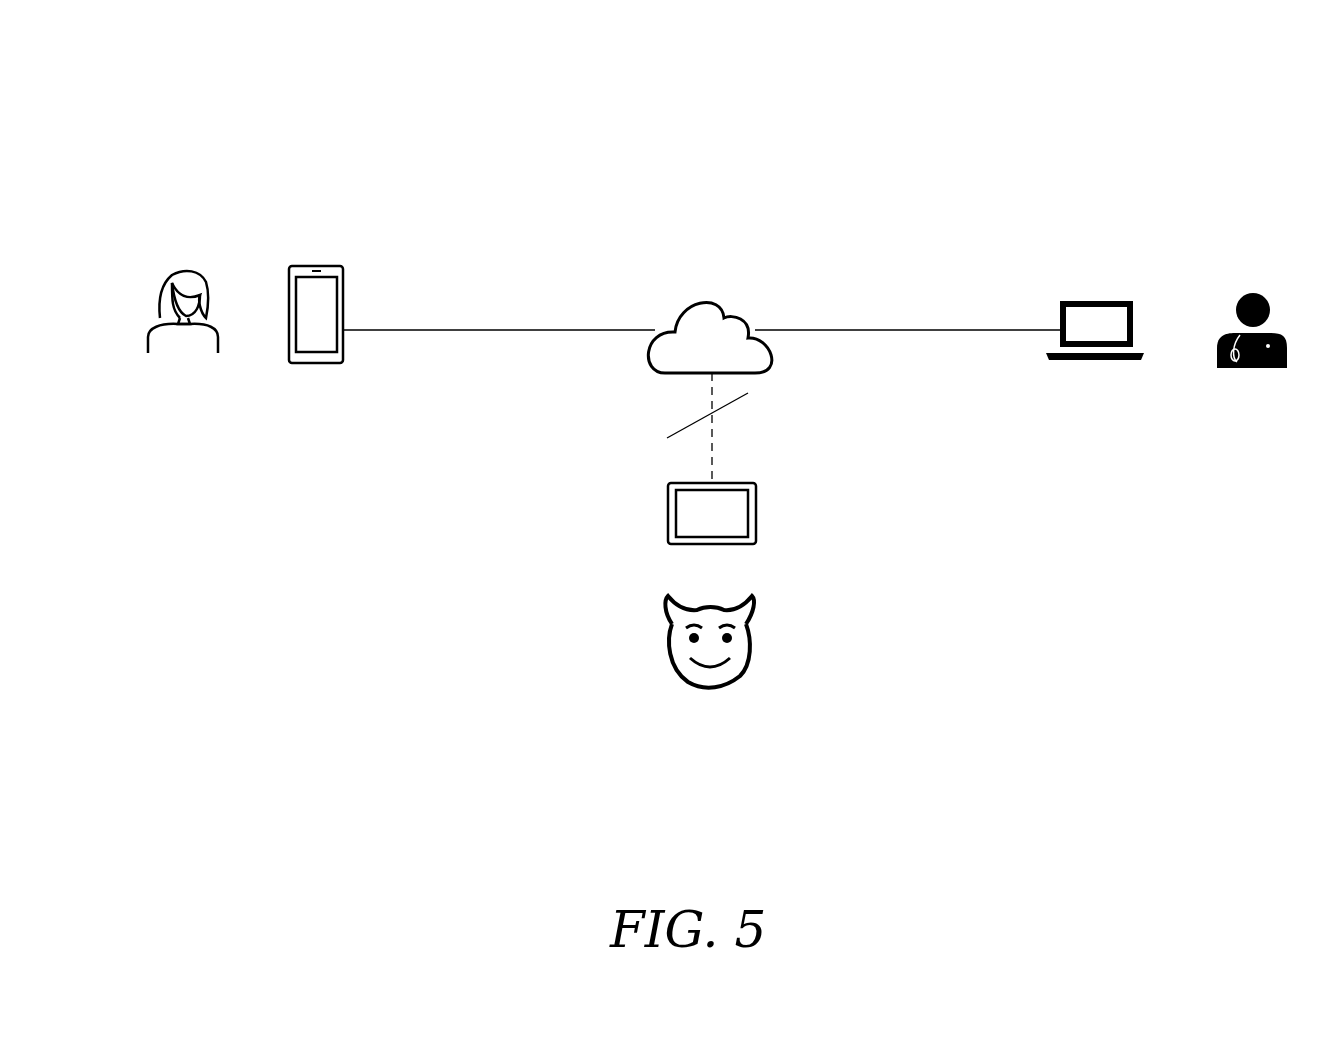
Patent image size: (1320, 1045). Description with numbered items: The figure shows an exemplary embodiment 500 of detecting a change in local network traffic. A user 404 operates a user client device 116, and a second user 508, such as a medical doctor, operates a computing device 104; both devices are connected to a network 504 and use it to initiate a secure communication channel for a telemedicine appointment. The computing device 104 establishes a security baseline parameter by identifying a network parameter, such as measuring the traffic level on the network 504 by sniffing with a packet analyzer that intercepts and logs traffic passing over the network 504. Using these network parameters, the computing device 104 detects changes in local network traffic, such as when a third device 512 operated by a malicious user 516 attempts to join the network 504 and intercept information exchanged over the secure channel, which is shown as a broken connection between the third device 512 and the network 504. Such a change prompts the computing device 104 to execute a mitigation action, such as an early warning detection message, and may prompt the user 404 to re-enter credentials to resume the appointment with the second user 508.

The exemplary embodiment 500 is at (288, 82).
The user 404 is at (181, 268).
The user client device 116 is at (315, 265).
The network 504 is at (698, 300).
The computing device 104 is at (1098, 300).
The second user 508 is at (1250, 292).
The third device 512 is at (757, 513).
The malicious user 516 is at (752, 643).